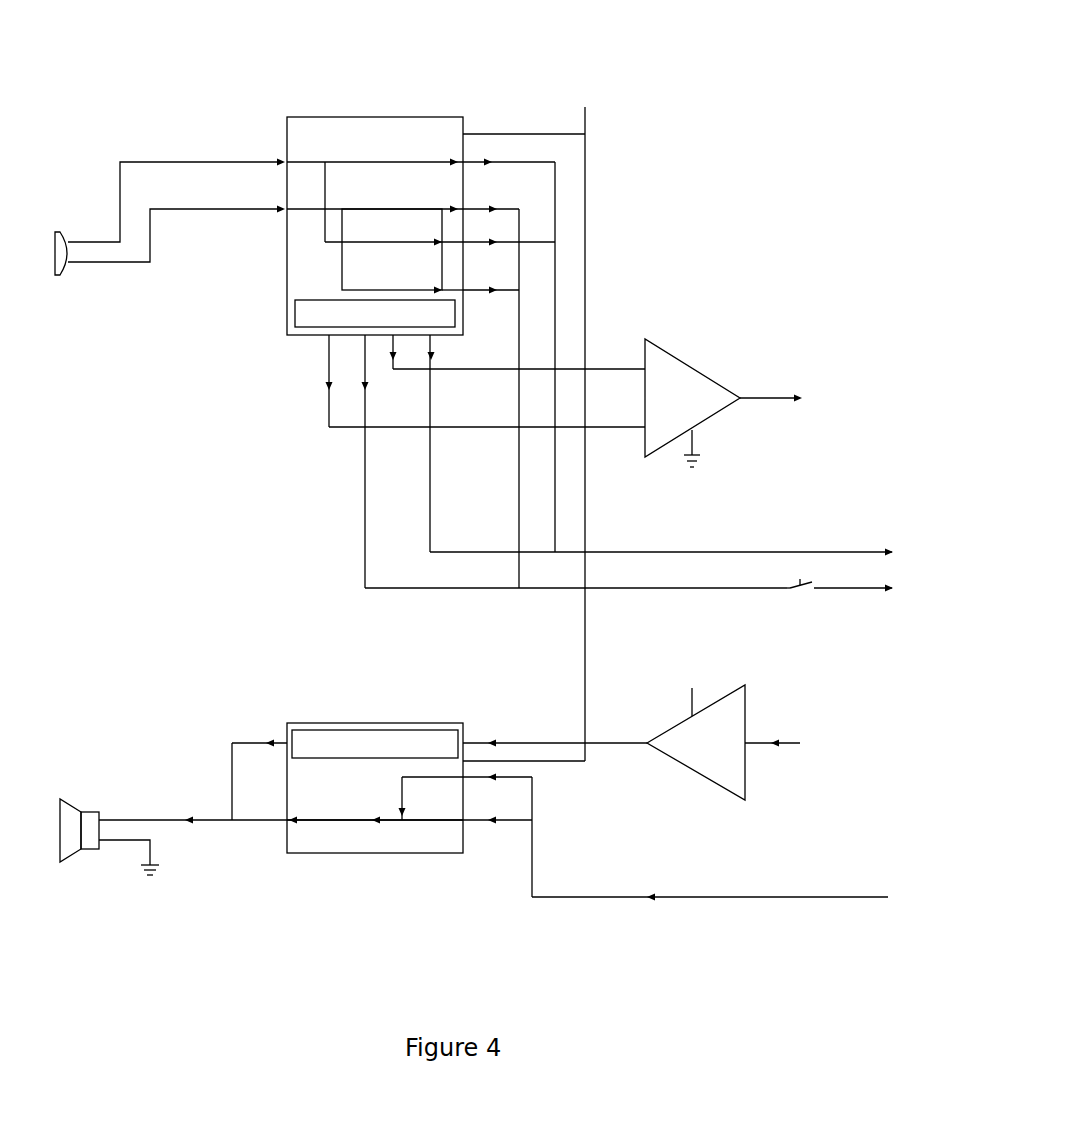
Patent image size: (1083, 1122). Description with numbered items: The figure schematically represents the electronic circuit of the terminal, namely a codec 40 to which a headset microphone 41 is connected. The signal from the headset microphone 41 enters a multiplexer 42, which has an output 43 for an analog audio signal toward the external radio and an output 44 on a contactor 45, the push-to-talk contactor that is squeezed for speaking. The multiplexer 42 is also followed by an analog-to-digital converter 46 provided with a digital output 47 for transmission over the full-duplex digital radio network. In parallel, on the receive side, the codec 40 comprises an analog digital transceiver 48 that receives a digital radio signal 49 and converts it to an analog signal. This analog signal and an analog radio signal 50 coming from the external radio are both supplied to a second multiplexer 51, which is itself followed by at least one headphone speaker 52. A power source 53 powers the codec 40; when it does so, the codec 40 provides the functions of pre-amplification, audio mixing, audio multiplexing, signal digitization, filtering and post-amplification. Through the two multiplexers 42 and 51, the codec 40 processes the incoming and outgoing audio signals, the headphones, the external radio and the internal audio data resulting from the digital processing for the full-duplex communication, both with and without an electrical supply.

The codec 40 is at (118, 476).
The headset microphone 41 is at (66, 243).
The multiplexer 42 is at (432, 188).
The output for an analog audio signal 43 is at (862, 550).
The output on a contactor 44 is at (688, 590).
The contactor 45 is at (795, 584).
The analog-to-digital converter 46 is at (665, 378).
The digital output 47 is at (752, 390).
The analog digital transceiver 48 is at (665, 742).
The digital radio signal 49 is at (782, 748).
The analog radio signal 50 is at (793, 897).
The multiplexer 51 is at (405, 835).
The headphone speaker 52 is at (75, 830).
The power source 53 is at (320, 130).